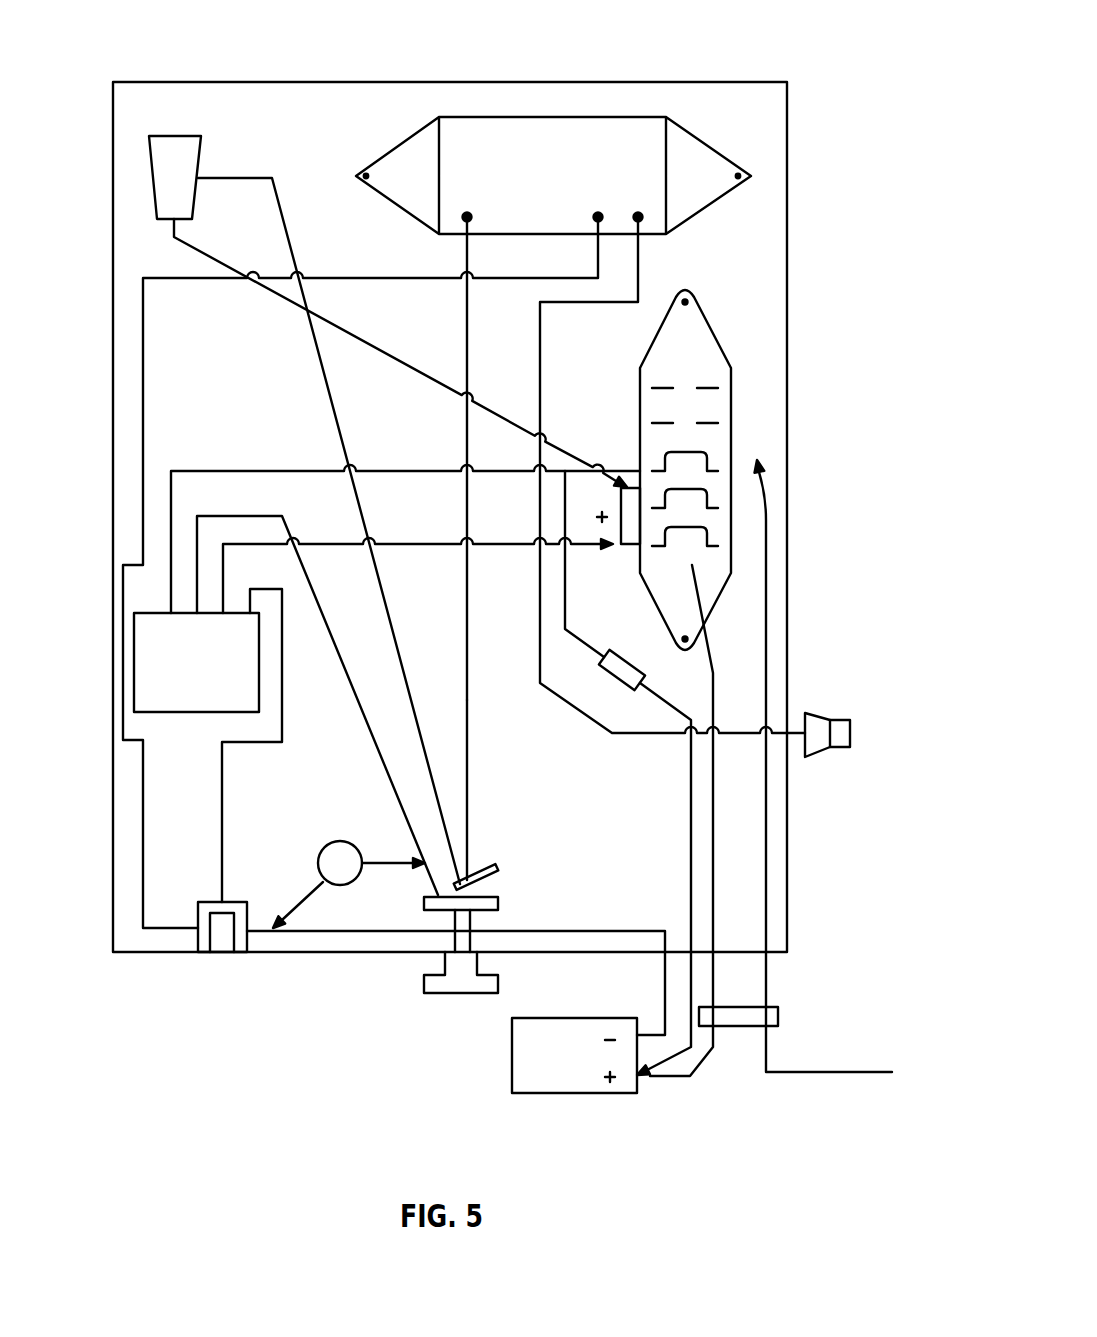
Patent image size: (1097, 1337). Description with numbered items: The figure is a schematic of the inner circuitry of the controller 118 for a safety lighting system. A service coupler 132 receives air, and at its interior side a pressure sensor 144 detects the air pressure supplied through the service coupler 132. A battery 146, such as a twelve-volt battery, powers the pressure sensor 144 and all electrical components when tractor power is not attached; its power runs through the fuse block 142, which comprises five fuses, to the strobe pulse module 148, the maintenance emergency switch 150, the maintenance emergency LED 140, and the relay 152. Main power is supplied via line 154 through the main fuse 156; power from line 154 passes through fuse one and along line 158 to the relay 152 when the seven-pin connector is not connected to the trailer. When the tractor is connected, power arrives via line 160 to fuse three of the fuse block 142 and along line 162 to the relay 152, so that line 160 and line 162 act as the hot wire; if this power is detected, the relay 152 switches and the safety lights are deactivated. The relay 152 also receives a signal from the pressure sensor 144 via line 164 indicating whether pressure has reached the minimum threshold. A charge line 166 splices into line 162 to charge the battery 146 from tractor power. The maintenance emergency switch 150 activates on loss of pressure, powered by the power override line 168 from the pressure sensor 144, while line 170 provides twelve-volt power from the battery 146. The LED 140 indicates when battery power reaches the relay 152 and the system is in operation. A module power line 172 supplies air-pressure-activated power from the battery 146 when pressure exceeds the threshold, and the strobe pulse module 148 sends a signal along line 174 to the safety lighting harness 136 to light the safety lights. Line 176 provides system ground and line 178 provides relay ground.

The controller 118 is at (741, 40).
The strobe pulse module 148 is at (603, 117).
The maintenance emergency switch 150 is at (160, 180).
The line 170 is at (197, 247).
The line 176 is at (143, 370).
The line 162 is at (255, 470).
The module power line 172 is at (467, 407).
The fuse block 142 is at (705, 313).
The line 158 is at (448, 546).
The relay 152 is at (143, 668).
The line 164 is at (373, 737).
The power override line 168 is at (460, 790).
The line 174 is at (577, 708).
The safety lighting harness 136 is at (850, 733).
The maintenance emergency LED 140 is at (328, 848).
The pressure sensor 144 is at (498, 867).
The charge line 166 is at (692, 823).
The line 154 is at (713, 850).
The line 178 is at (218, 880).
The service coupler 132 is at (420, 1008).
The main fuse 156 is at (778, 1016).
The battery 146 is at (555, 1094).
The line 160 is at (872, 1084).